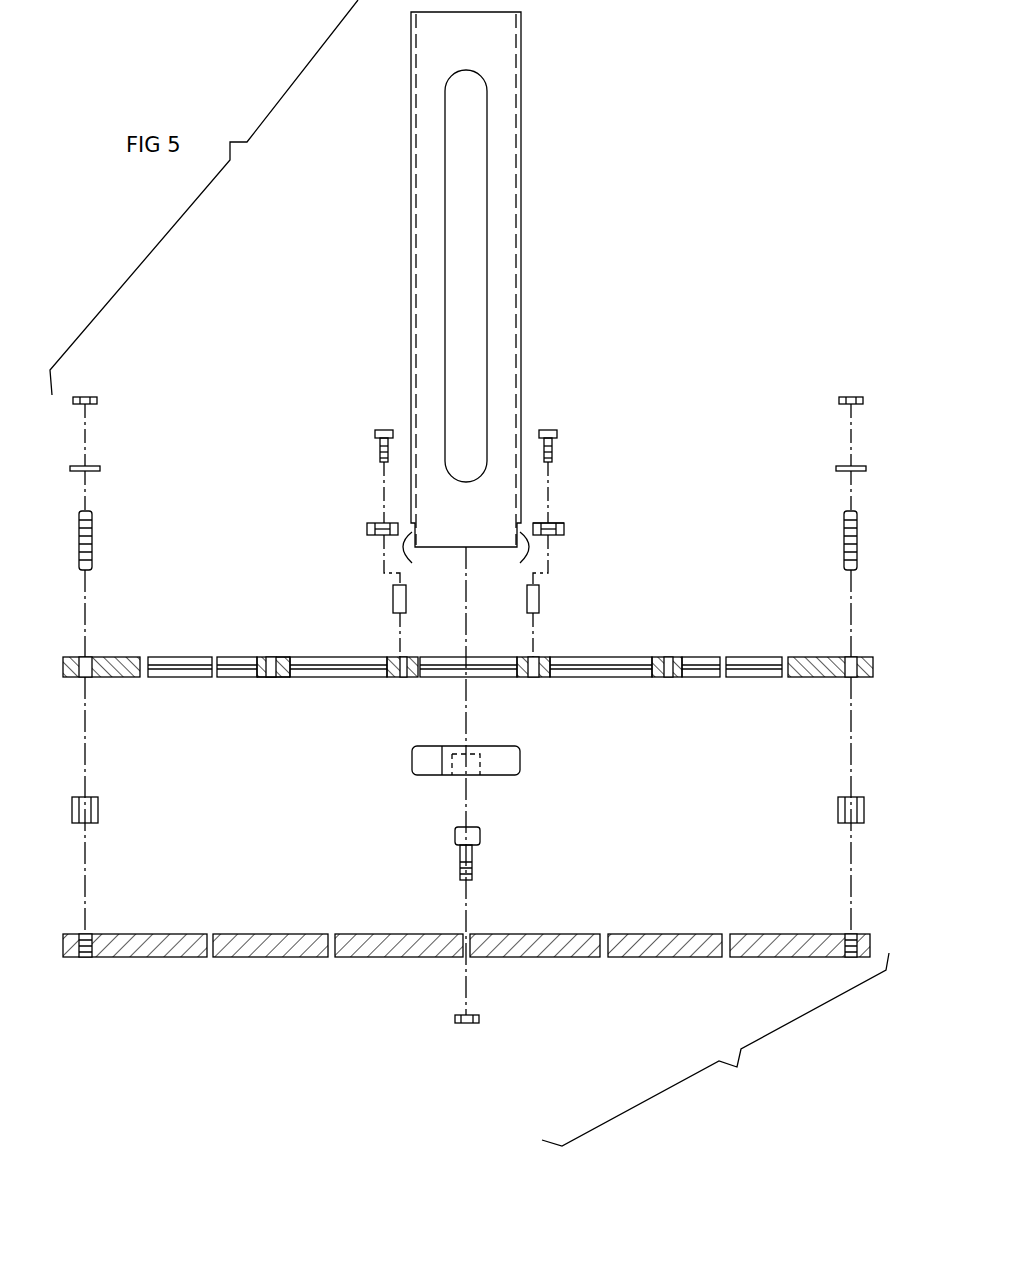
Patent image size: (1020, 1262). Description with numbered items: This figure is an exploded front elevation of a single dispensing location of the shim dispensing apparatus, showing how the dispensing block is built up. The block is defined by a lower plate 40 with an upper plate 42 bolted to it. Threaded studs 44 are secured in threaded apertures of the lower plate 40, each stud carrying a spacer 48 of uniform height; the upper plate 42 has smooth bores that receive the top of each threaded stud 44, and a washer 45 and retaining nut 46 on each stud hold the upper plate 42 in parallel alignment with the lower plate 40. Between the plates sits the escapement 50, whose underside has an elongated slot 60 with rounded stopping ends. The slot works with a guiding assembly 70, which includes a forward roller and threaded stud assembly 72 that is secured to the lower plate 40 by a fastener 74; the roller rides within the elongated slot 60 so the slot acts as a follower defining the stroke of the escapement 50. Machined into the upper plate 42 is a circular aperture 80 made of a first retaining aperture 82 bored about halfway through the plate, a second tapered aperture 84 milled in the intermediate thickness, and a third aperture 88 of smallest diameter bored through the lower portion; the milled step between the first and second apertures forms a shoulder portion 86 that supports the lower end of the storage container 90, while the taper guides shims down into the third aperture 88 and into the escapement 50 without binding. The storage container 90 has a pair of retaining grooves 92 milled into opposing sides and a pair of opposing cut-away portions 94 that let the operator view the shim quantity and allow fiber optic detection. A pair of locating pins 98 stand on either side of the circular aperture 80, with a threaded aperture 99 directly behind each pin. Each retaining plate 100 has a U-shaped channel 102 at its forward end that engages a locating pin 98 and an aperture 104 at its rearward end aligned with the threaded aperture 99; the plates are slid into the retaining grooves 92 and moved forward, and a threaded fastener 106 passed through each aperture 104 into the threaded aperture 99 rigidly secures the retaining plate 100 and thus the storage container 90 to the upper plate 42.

The lower plate 40 is at (122, 934).
The upper plate 42 is at (100, 657).
The threaded stud 44 is at (92, 542).
The washer 45 is at (100, 469).
The retaining nut 46 is at (97, 400).
The spacer 48 is at (98, 803).
The escapement 50 is at (512, 758).
The elongated slot 60 is at (460, 778).
The guiding assembly 70 is at (497, 812).
The forward roller and threaded stud assembly 72 is at (480, 835).
The fastener 74 is at (475, 1023).
The circular aperture 80 is at (314, 610).
The first retaining aperture 82 is at (283, 656).
The second tapered aperture 84 is at (286, 678).
The shoulder portion 86 is at (282, 660).
The third aperture 88 is at (274, 678).
The storage container 90 is at (503, 58).
The retaining groove 92 is at (466, 557).
The cut-away portion 94 is at (482, 217).
The locating pin 98 is at (393, 599).
The threaded aperture 99 is at (533, 657).
The retaining plate 100 is at (372, 528).
The U-shaped channel 102 is at (372, 533).
The aperture 104 is at (548, 530).
The threaded fastener 106 is at (384, 430).